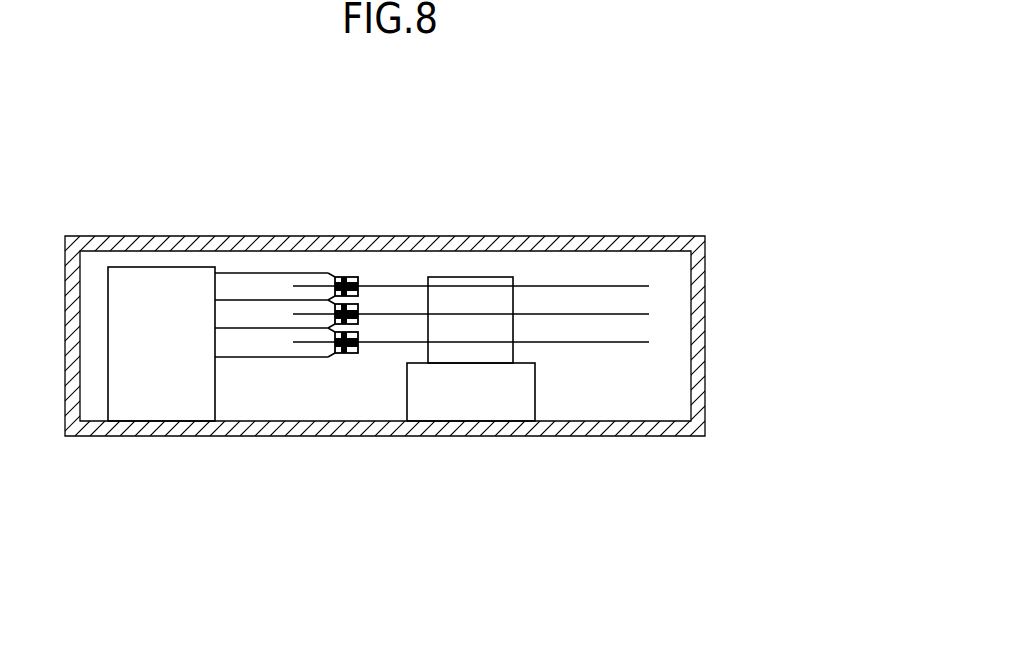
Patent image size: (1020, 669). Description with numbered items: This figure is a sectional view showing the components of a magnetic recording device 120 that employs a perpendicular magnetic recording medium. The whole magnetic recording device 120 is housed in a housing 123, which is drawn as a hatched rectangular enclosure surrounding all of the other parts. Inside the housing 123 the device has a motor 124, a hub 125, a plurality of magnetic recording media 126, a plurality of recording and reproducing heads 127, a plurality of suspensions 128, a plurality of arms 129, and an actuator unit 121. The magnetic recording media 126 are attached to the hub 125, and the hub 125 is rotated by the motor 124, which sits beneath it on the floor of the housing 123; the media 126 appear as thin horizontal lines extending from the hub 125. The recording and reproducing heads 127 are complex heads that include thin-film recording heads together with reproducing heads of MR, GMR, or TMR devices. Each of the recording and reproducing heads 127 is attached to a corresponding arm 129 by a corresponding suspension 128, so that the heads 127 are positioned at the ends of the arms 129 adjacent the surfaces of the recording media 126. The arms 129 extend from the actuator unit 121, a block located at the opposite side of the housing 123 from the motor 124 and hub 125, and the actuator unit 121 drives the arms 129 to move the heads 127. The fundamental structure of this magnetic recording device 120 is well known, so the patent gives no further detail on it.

The magnetic recording device 120 is at (452, 315).
The actuator unit 121 is at (165, 412).
The housing 123 is at (700, 385).
The motor 124 is at (473, 412).
The hub 125 is at (472, 277).
The magnetic recording media 126 is at (589, 283).
The recording and reproducing heads 127 is at (361, 275).
The suspensions 128 is at (326, 272).
The arms 129 is at (248, 272).